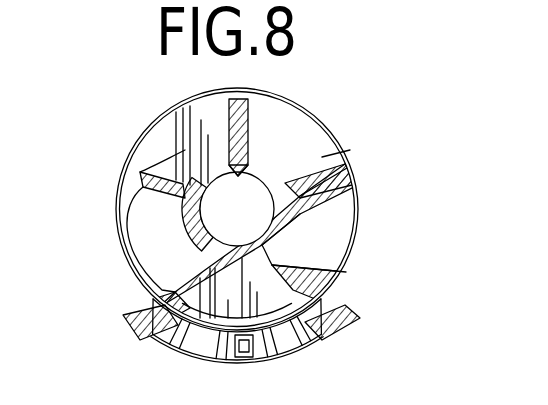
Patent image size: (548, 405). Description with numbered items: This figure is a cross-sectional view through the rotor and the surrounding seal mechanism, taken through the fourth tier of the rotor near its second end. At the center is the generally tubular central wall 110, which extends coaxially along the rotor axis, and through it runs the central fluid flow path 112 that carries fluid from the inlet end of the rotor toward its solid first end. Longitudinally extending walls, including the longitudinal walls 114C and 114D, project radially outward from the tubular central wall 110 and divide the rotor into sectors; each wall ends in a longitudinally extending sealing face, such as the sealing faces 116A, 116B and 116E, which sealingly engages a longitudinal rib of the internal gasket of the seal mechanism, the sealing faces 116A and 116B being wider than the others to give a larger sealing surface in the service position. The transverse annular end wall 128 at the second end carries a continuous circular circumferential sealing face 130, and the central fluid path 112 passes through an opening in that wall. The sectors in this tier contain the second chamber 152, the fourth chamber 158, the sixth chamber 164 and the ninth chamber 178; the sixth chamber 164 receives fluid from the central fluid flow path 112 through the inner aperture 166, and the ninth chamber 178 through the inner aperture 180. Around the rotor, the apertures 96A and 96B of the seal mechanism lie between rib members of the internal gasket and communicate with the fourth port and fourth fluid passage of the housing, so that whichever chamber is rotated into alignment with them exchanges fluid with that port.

The aperture 96A is at (207, 347).
The aperture 96B is at (290, 350).
The tubular central wall 110 is at (288, 240).
The central fluid flow path 112 is at (300, 218).
The longitudinal wall 114C is at (152, 193).
The longitudinal wall 114D is at (232, 132).
The sealing face 116A is at (330, 290).
The sealing face 116B is at (152, 302).
The sealing face 116E is at (352, 182).
The transverse annular end wall 128 is at (305, 128).
The circumferential sealing face 130 is at (338, 148).
The second chamber 152 is at (266, 288).
The fourth chamber 158 is at (143, 235).
The sixth chamber 164 is at (158, 152).
The inner aperture 166 is at (216, 188).
The ninth chamber 178 is at (350, 150).
The inner aperture 180 is at (246, 170).